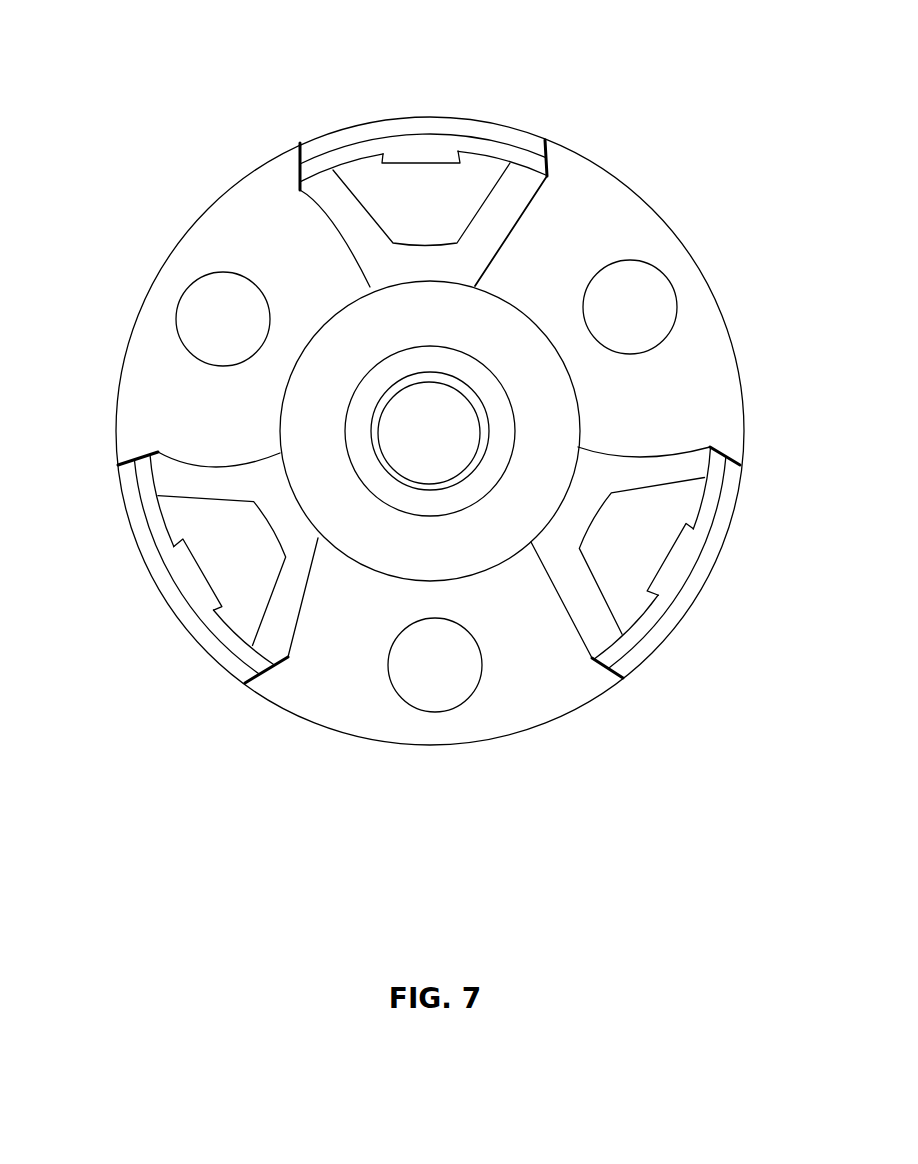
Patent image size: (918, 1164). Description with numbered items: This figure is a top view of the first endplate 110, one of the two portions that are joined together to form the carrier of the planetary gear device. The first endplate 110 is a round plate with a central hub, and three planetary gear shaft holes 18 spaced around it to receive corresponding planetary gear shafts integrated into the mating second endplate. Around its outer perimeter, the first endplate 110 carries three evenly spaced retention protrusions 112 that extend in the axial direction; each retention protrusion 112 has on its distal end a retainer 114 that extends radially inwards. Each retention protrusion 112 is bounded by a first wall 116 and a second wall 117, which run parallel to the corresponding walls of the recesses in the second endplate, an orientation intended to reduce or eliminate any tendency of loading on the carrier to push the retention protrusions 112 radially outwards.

The first endplate 110 is at (690, 84).
The planetary gear shaft holes 18 is at (205, 305).
The retention protrusion 112 is at (510, 130).
The retainer 114 is at (424, 152).
The first wall 116 is at (563, 162).
The second wall 117 is at (300, 148).